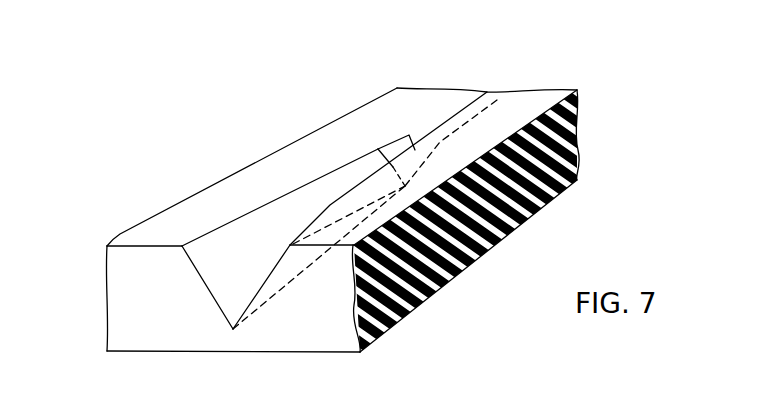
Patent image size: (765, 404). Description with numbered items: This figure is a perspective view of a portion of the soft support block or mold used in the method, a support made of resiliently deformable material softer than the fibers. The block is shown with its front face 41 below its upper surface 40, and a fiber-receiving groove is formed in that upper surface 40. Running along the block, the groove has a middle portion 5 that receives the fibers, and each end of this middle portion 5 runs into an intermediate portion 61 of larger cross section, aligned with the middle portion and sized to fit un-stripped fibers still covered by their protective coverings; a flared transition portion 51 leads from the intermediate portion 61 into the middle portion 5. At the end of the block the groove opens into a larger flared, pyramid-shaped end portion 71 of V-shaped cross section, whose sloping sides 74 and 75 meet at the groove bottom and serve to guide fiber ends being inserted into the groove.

The fiber-receiving groove middle portion 5 is at (468, 107).
The front face of bar 41 is at (117, 290).
The upper surface 40 is at (233, 190).
The flared end portion 71 is at (208, 240).
The sloping side 74 is at (210, 277).
The sloping side 75 is at (262, 275).
The intermediate portion 61 is at (319, 193).
The flared transition portion 51 is at (397, 147).